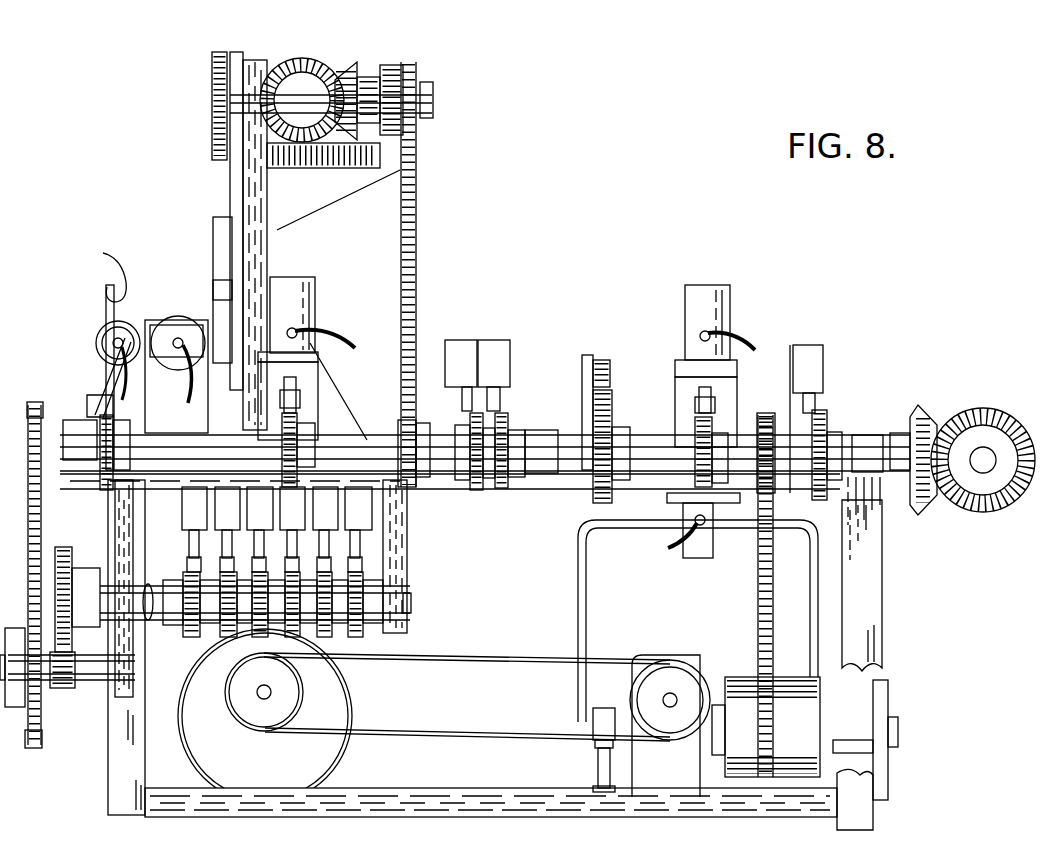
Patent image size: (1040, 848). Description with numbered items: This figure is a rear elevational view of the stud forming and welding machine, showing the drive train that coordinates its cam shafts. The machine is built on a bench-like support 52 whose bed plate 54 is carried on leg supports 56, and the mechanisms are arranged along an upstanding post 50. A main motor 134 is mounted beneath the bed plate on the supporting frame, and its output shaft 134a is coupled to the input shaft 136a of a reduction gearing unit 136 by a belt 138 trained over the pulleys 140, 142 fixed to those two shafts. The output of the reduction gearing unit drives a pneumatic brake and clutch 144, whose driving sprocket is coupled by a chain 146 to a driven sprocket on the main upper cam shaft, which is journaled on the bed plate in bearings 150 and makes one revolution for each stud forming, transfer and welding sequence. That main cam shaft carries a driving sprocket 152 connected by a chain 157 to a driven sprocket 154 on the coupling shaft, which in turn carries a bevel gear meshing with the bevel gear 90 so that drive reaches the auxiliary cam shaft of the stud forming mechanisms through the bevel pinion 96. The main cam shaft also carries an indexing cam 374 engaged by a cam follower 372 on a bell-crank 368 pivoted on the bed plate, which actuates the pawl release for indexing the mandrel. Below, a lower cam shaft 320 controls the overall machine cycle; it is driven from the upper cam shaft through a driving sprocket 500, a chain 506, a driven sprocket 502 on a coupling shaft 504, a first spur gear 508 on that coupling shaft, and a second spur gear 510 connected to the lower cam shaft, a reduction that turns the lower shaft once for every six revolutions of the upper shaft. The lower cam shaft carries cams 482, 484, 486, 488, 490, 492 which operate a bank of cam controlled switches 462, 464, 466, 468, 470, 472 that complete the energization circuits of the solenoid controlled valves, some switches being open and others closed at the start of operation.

The post 50 is at (262, 247).
The bench-like support 52 is at (892, 595).
The bed plate 54 is at (560, 484).
The leg supports 56 is at (112, 780).
The bevel gear 90 is at (300, 72).
The bevel pinion 96 is at (318, 85).
The main motor 134 is at (202, 735).
The output shaft 134a is at (257, 692).
The reduction gearing unit 136 is at (648, 658).
The input shaft 136a is at (672, 692).
The belt 138 is at (518, 656).
The pulley 140 is at (304, 698).
The pulley 142 is at (632, 687).
The pneumatic brake and clutch 144 is at (786, 676).
The chain 146 is at (756, 596).
The bearings 150 is at (76, 420).
The driving sprocket 152 is at (400, 432).
The driven sprocket 154 is at (422, 80).
The chain 157 is at (422, 226).
The lower cam shaft 320 is at (411, 606).
The bell-crank 368 is at (582, 366).
The cam follower 372 is at (604, 360).
The indexing cam 374 is at (615, 408).
The cam controlled switch 462 is at (195, 529).
The cam controlled switch 464 is at (228, 529).
The cam controlled switch 466 is at (260, 529).
The cam controlled switch 468 is at (293, 529).
The cam controlled switch 470 is at (326, 529).
The cam controlled switch 472 is at (358, 529).
The cam 482 is at (190, 628).
The cam 484 is at (222, 628).
The cam 486 is at (266, 630).
The cam 488 is at (292, 640).
The cam 490 is at (325, 640).
The cam 492 is at (365, 636).
The driving sprocket 500 is at (40, 402).
The driven sprocket 502 is at (34, 748).
The coupling shaft 504 is at (102, 681).
The chain 506 is at (28, 515).
The first spur gear 508 is at (65, 688).
The second spur gear 510 is at (65, 548).